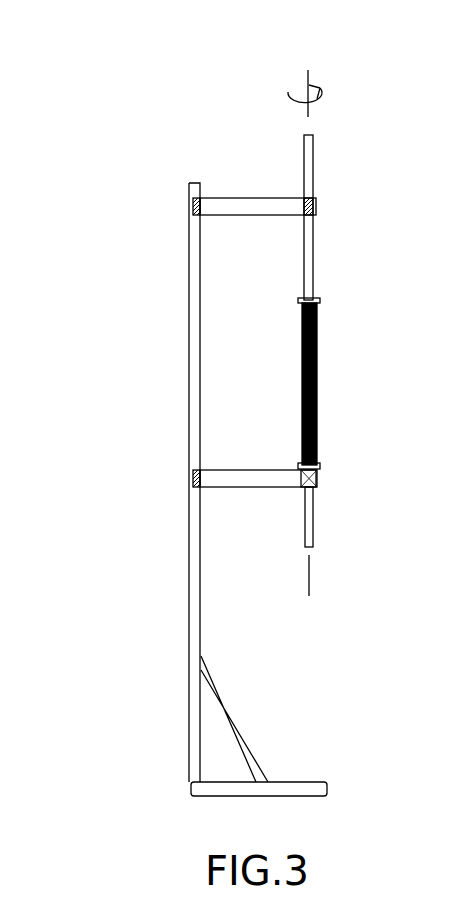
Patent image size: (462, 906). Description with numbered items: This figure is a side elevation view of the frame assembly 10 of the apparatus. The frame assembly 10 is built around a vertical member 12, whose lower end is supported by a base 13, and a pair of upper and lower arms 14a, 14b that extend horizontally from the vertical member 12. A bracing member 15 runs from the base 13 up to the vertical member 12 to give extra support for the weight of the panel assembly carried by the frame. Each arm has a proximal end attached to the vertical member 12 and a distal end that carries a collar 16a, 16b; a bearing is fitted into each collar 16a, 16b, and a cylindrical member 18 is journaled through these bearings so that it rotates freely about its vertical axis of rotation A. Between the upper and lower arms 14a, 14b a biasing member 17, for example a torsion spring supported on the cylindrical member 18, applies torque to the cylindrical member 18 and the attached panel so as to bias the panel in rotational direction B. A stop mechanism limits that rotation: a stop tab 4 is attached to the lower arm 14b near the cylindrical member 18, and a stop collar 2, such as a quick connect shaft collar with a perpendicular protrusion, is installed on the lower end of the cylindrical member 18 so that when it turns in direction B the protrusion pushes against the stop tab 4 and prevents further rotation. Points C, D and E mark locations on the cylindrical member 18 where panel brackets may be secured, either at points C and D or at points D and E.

The frame assembly 10 is at (160, 78).
The vertical member 12 is at (188, 305).
The base 13 is at (305, 780).
The upper arm 14a is at (225, 212).
The lower arm 14b is at (228, 478).
The bracing member 15 is at (226, 712).
The upper collar 16a is at (309, 206).
The lower collar 16b is at (318, 481).
The biasing member 17 is at (318, 352).
The cylindrical member 18 is at (315, 138).
The stop collar 2 is at (318, 493).
The stop tab 4 is at (293, 493).
The vertical axis of rotation A is at (305, 309).
The rotational direction B is at (323, 88).
The point C is at (313, 247).
The point D is at (315, 520).
The point E is at (310, 168).